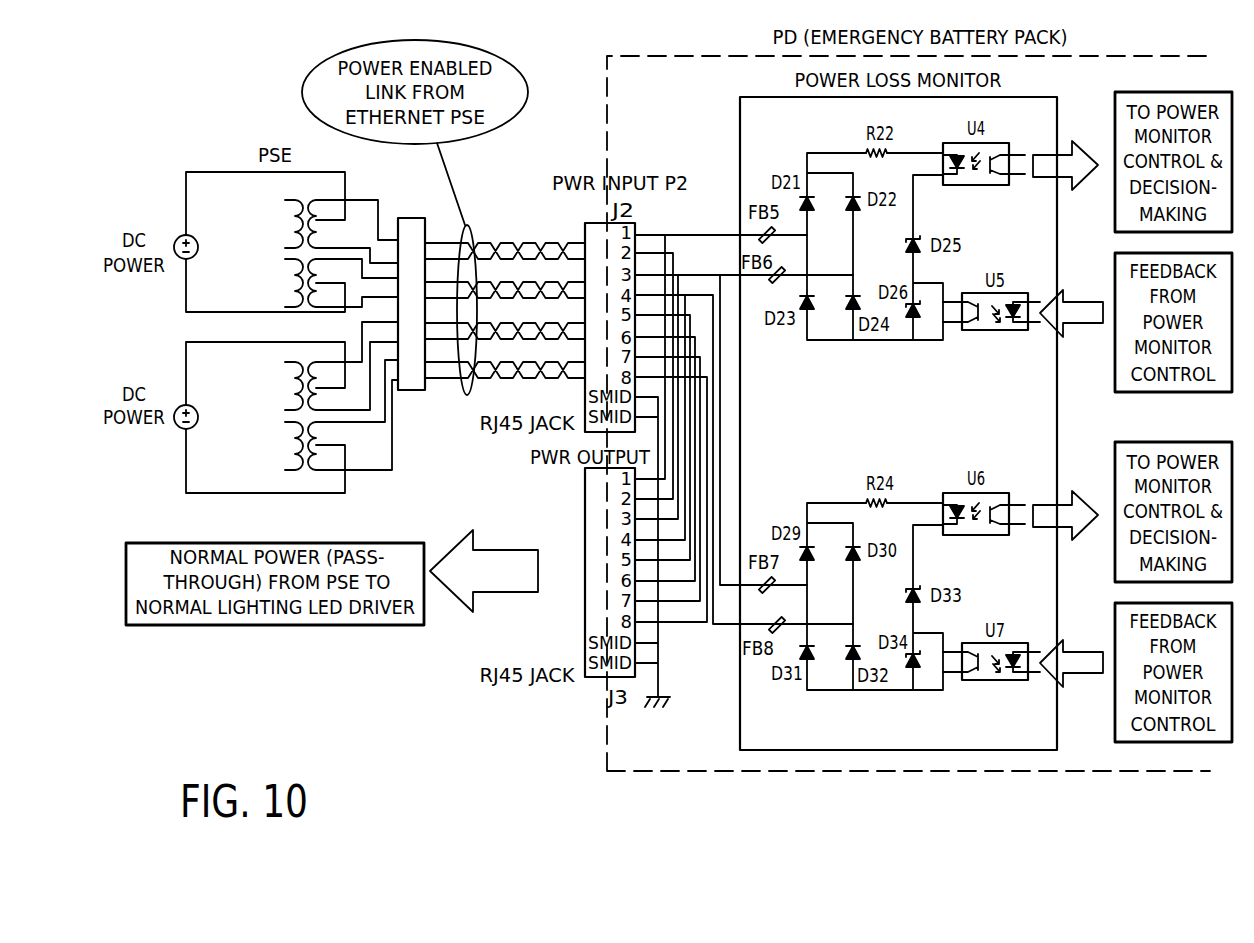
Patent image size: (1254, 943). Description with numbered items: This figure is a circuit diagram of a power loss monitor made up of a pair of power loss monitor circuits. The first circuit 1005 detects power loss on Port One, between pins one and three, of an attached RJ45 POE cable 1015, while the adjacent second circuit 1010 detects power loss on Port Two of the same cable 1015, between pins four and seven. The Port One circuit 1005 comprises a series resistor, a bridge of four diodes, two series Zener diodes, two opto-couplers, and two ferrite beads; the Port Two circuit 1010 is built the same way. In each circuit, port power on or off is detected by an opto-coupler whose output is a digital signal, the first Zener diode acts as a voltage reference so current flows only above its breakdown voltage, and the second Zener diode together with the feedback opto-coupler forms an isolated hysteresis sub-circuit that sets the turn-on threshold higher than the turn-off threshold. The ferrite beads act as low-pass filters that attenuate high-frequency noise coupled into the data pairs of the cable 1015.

The Port 1 power loss monitor circuit 1005 is at (1043, 97).
The Port 2 power loss monitor circuit 1010 is at (912, 750).
The RJ45 POE cable 1015 is at (585, 232).